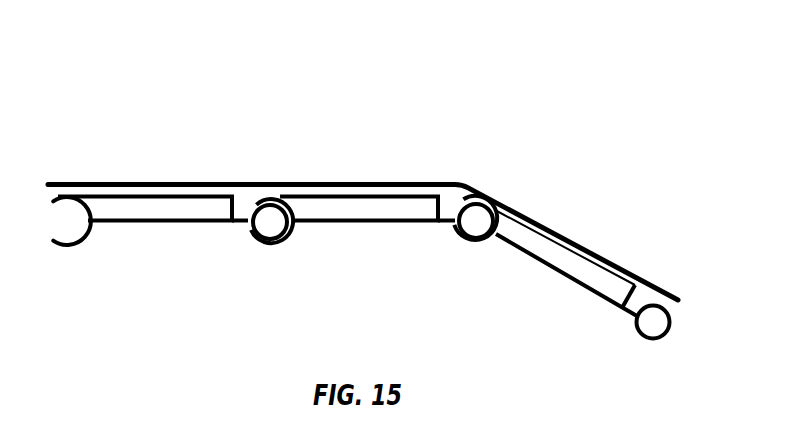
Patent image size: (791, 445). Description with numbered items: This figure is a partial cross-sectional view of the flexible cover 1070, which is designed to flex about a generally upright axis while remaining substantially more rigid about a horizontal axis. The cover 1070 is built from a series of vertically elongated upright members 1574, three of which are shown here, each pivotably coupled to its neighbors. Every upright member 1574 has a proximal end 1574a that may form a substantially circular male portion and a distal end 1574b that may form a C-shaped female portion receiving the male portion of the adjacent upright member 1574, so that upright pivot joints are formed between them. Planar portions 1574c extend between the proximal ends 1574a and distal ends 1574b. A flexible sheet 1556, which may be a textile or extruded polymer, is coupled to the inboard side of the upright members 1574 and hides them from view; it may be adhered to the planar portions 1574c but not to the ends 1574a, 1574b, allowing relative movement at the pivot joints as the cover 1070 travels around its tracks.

The flexible cover 1070 is at (558, 152).
The flexible sheet 1556 is at (452, 182).
The upright members 1574 is at (197, 193).
The proximal end 1574a is at (67, 193).
The distal end 1574b is at (272, 217).
The planar portions 1574c is at (147, 193).